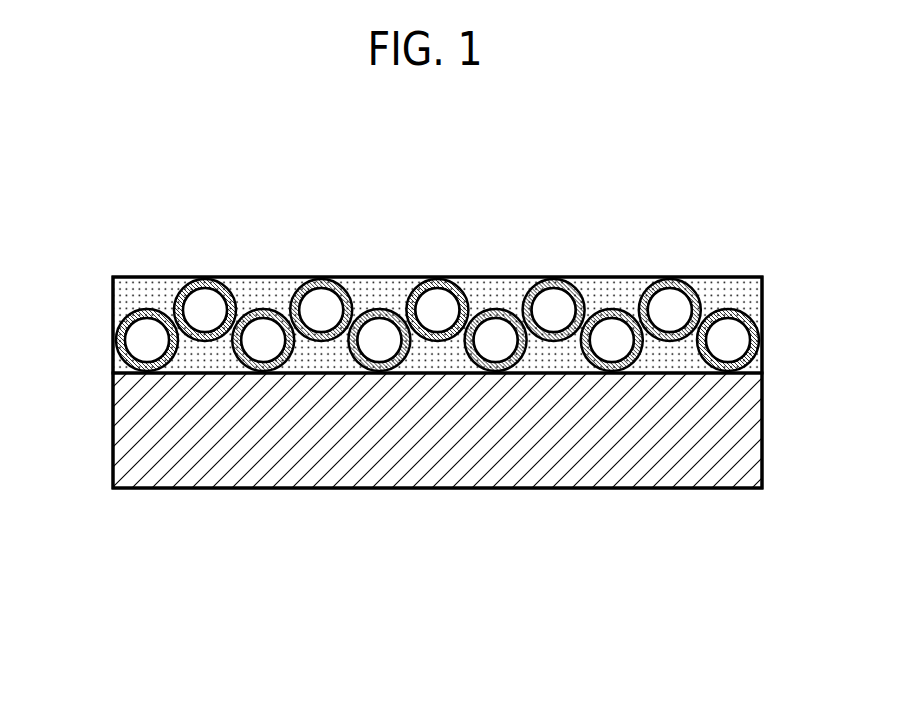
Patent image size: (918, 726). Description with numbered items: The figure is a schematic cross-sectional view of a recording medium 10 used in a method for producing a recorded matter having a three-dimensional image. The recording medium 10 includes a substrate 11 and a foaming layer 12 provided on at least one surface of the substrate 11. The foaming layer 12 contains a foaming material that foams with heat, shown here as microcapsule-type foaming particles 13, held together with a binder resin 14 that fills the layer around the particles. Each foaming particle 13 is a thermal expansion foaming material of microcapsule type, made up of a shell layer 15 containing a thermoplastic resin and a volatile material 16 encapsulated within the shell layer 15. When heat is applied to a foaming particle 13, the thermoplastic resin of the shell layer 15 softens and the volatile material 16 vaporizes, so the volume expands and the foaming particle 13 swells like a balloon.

The recording medium 10 is at (703, 217).
The substrate 11 is at (347, 477).
The foaming layer 12 is at (100, 279).
The foaming particles 13 is at (437, 278).
The binder resin 14 is at (258, 290).
The shell layer 15 is at (407, 297).
The volatile material 16 is at (445, 296).